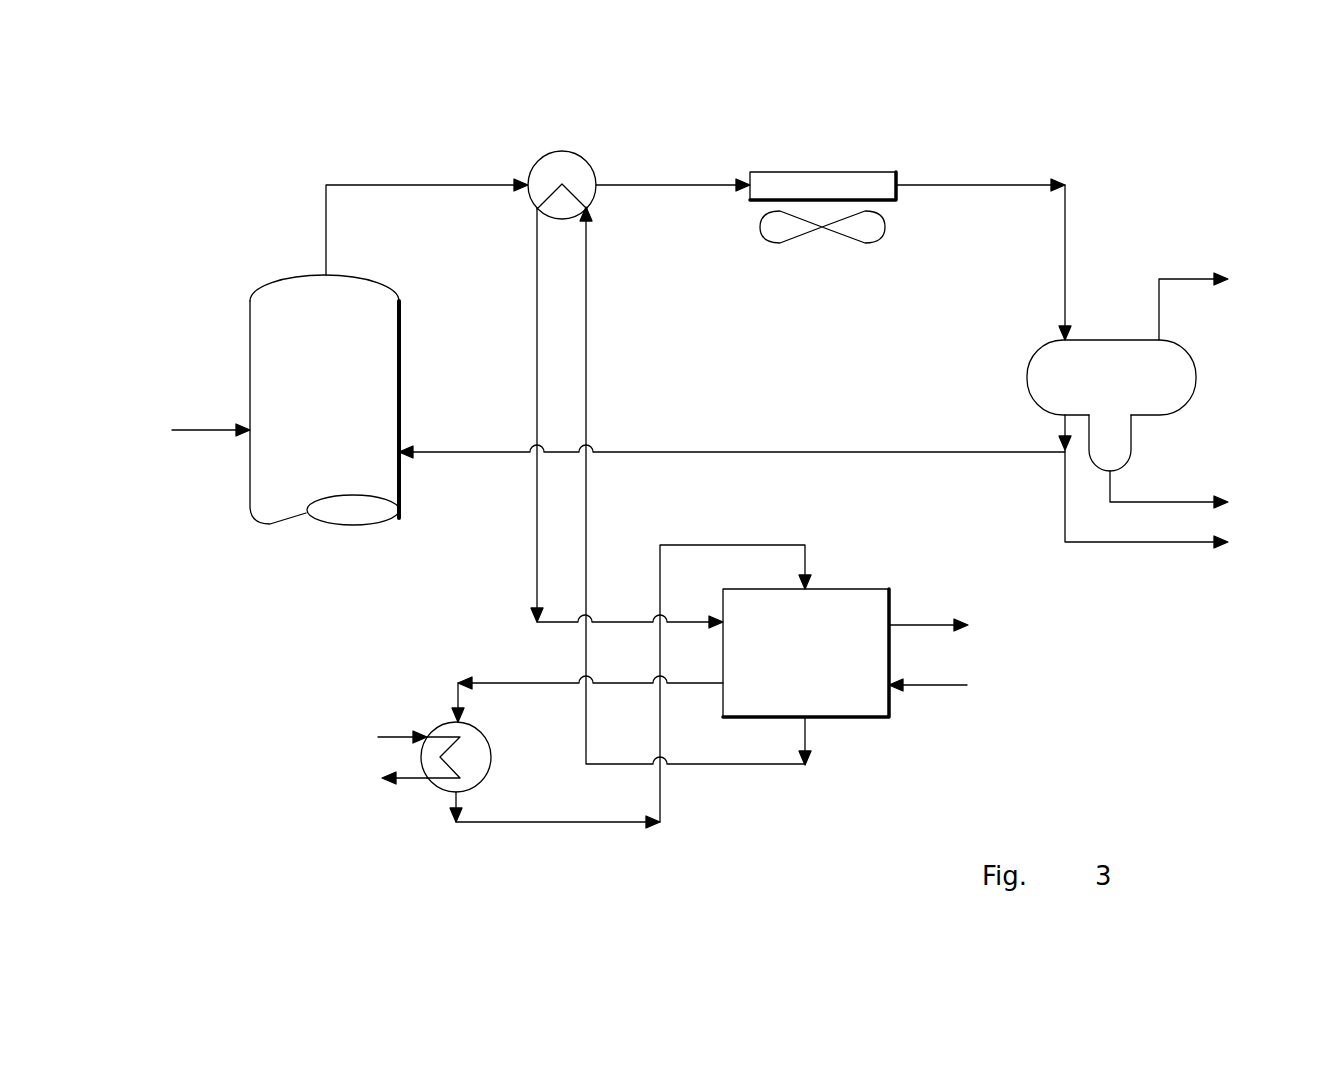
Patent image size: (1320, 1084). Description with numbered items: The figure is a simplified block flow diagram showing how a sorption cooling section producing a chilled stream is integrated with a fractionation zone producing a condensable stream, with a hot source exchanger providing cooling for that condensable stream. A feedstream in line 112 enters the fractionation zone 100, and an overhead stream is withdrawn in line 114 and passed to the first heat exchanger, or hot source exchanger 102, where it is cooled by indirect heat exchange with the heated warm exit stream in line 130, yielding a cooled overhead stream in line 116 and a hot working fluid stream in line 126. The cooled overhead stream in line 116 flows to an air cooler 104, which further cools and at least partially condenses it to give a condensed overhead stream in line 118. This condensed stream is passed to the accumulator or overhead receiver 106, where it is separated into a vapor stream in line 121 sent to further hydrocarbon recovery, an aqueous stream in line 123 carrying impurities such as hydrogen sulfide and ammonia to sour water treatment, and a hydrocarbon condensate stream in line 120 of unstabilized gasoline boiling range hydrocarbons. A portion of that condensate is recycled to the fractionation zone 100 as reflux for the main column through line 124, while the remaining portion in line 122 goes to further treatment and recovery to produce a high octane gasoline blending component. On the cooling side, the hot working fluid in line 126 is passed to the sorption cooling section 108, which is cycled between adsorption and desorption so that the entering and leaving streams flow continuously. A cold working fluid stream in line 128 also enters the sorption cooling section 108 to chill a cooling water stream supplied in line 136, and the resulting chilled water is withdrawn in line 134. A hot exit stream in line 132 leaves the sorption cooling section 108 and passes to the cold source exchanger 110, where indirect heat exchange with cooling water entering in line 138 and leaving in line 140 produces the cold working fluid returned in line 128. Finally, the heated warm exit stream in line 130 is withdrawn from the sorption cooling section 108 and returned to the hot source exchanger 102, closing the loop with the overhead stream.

The fractionation zone 100 is at (348, 391).
The hot source exchanger 102 is at (576, 151).
The air cooler 104 is at (828, 172).
The separator 106 is at (1143, 396).
The sorption cooling section 108 is at (828, 671).
The cold source exchanger 110 is at (488, 775).
The feedstream line 112 is at (202, 430).
The overhead stream line 114 is at (437, 185).
The cooled overhead stream line 116 is at (655, 186).
The condensed overhead stream line 118 is at (955, 186).
The hydrocarbon condensate stream 120 is at (1063, 429).
The vapor stream line 121 is at (1192, 279).
The hydrocarbon condensate remaining portion line 122 is at (1163, 545).
The aqueous stream line 123 is at (1165, 502).
The reflux line 124 is at (848, 452).
The hot working fluid stream line 126 is at (537, 340).
The cold working fluid stream line 128 is at (805, 555).
The warm exit stream line 130 is at (586, 338).
The hot exit stream line 132 is at (623, 683).
The chilled water stream line 134 is at (933, 625).
The cooling water stream line 136 is at (942, 687).
The cooling water stream line 138 is at (400, 737).
The cooling water withdrawal line 140 is at (410, 778).